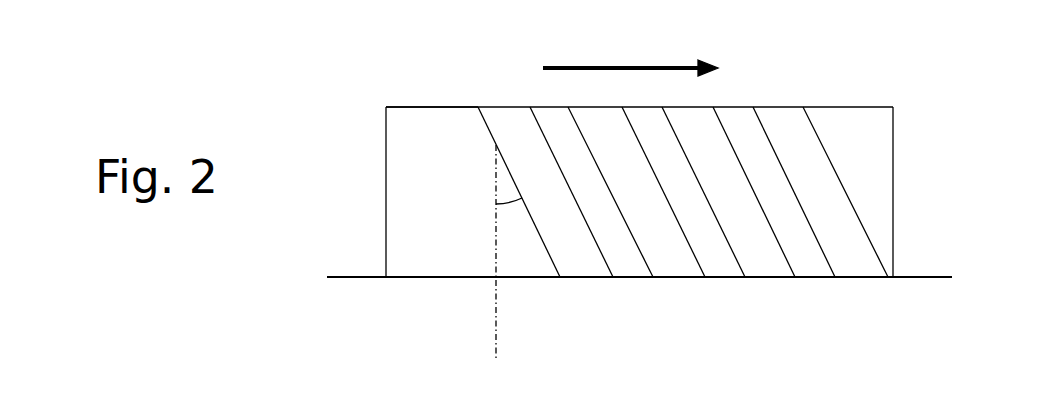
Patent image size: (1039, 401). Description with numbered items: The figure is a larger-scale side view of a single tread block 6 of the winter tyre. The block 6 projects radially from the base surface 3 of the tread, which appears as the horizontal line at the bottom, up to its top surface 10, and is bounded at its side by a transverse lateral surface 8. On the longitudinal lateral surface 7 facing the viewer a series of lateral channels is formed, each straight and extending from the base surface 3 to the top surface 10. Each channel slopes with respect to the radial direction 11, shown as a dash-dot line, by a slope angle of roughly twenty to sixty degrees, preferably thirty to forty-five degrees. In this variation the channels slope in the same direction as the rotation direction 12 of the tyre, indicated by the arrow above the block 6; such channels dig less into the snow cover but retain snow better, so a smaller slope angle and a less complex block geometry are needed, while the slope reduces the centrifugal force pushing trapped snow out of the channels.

The base surface 3 is at (346, 268).
The block 6 is at (938, 177).
The longitudinal lateral surface 7 is at (425, 140).
The transverse lateral surface 8 is at (385, 135).
The top surface 10 is at (833, 100).
The radial direction 11 is at (494, 343).
The rotation direction 12 is at (598, 65).